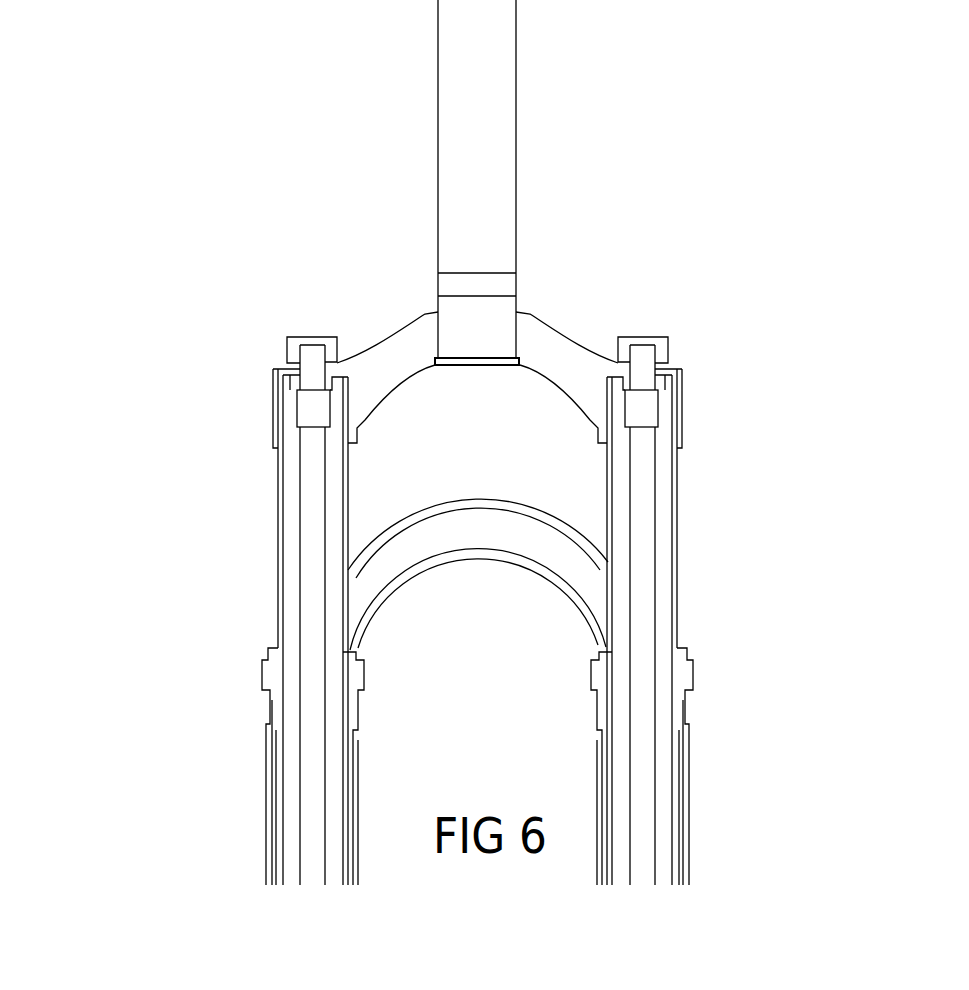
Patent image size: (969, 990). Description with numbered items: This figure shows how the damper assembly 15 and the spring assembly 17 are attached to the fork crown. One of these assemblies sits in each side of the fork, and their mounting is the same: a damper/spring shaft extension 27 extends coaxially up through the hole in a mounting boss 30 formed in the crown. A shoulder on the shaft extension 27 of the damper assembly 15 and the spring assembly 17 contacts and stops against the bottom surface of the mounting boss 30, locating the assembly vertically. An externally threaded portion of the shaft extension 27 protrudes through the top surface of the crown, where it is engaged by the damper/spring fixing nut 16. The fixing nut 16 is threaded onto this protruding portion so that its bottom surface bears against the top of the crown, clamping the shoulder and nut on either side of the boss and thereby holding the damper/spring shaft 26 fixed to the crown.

The damper assembly 15 is at (643, 598).
The damper/spring fixing nut 16 is at (290, 340).
The spring assembly 17 is at (312, 620).
The damper/spring shaft 26 is at (312, 766).
The damper/spring shaft extension 27 is at (310, 405).
The mounting boss 30 is at (295, 385).